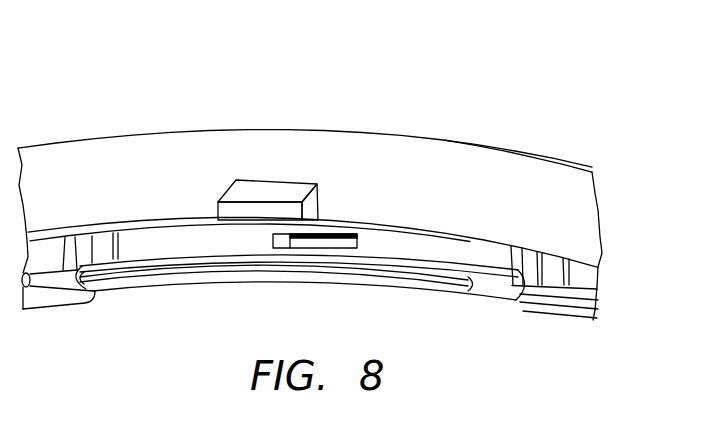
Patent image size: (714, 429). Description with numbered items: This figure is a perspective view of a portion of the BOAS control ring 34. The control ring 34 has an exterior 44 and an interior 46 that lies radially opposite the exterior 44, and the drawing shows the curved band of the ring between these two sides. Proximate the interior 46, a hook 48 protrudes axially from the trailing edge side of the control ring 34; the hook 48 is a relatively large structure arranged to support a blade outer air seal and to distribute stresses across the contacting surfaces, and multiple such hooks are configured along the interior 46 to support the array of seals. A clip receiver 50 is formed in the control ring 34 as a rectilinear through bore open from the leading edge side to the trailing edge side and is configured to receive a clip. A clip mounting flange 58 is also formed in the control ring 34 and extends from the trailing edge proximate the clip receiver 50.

The exterior 44 is at (76, 106).
The control ring 34 is at (592, 167).
The clip mounting flange 58 is at (259, 190).
The clip receiver 50 is at (368, 230).
The hook 48 is at (185, 268).
The interior 46 is at (73, 320).